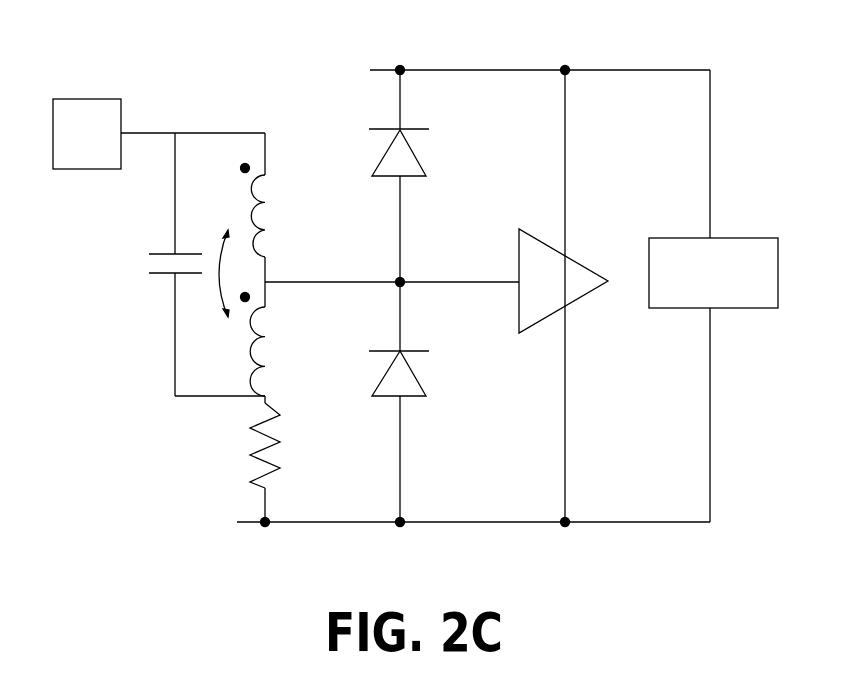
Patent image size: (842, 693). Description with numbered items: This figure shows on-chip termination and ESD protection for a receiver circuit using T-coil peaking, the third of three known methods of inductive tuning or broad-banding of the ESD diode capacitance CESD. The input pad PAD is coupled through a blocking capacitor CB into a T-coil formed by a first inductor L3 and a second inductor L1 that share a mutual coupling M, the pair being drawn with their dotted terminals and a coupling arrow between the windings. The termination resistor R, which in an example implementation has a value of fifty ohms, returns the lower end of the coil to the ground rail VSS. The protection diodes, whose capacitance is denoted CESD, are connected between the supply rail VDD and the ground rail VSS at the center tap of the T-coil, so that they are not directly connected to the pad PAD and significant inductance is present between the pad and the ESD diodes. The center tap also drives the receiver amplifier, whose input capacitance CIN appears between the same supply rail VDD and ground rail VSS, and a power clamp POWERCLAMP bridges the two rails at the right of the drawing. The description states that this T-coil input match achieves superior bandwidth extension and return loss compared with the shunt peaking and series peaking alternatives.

The supply rail VDD is at (540, 279).
The ground rail VSS is at (473, 543).
The pad PAD is at (159, 134).
The blocking capacitor CB is at (184, 264).
The primary inductor L3 is at (272, 220).
The secondary inductor L1 is at (272, 345).
The mutual inductance coupling M is at (212, 240).
The termination resistor R is at (278, 459).
The ESD diode capacitance CESD is at (397, 322).
The input capacitance CIN is at (566, 322).
The power clamp POWERCLAMP is at (713, 273).